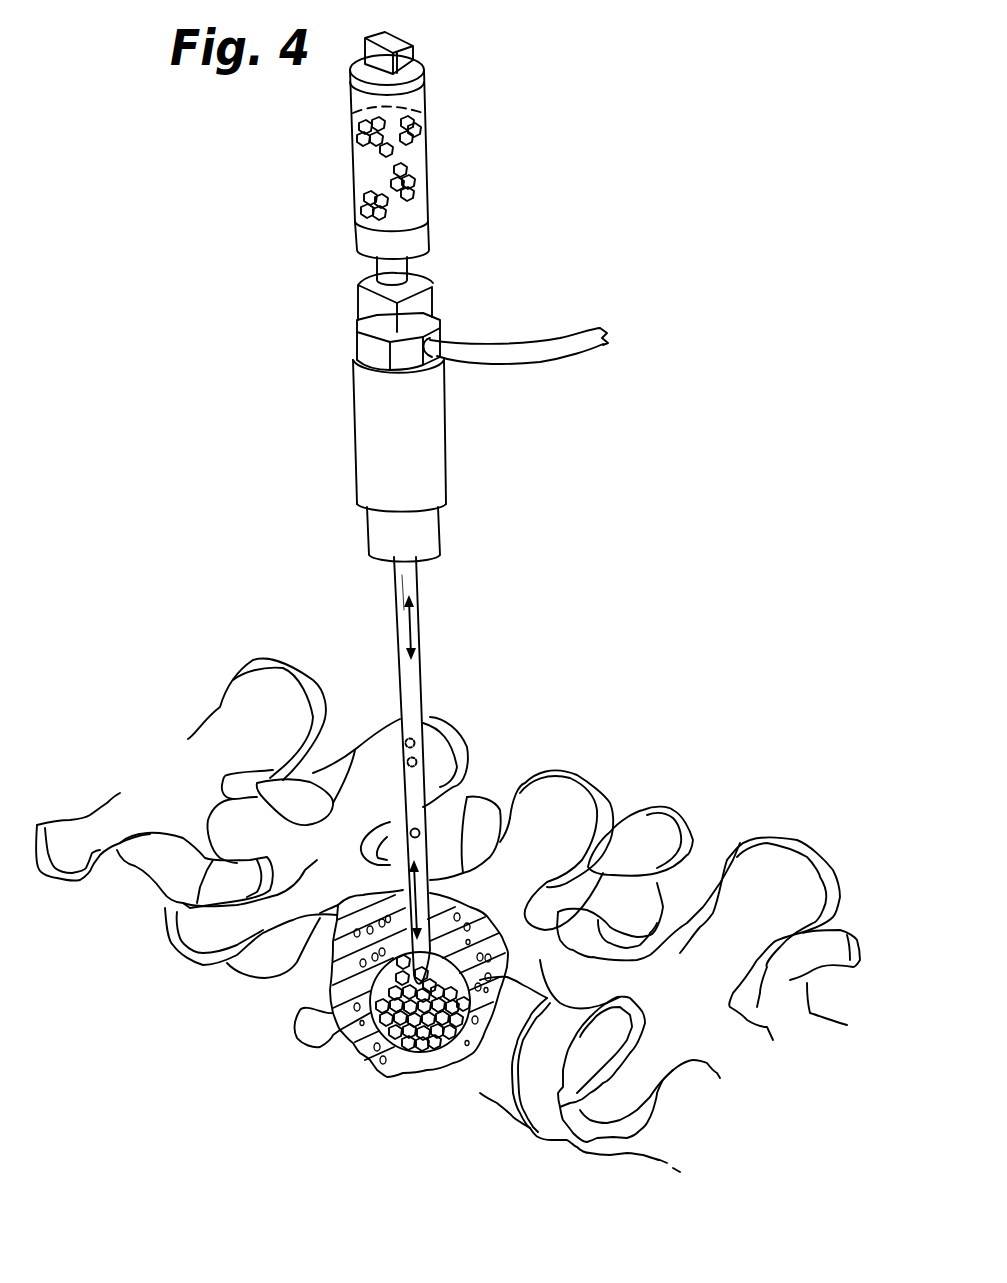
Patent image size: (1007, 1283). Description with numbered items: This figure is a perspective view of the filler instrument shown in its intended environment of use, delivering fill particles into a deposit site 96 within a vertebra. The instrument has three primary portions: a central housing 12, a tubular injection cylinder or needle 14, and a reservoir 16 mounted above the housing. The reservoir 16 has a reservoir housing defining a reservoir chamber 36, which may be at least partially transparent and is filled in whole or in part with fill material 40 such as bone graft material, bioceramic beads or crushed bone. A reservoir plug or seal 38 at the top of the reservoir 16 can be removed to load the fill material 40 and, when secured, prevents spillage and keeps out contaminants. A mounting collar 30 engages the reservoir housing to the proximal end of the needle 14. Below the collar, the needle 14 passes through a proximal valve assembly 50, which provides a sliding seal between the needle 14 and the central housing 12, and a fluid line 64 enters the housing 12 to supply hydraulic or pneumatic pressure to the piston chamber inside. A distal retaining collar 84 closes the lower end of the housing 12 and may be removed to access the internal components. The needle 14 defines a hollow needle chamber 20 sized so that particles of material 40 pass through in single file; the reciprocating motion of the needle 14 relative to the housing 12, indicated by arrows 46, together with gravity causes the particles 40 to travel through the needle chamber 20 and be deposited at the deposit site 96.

The central housing 12 is at (345, 424).
The tubular injection cylinder or needle 14 is at (428, 699).
The reservoir 16 is at (435, 157).
The needle chamber 20 is at (410, 668).
The mounting collar 30 is at (413, 245).
The reservoir chamber 36 is at (362, 163).
The reservoir plug or seal 38 is at (423, 74).
The fill material 40 is at (365, 190).
The arrows 46 is at (408, 627).
The proximal valve assembly 50 is at (427, 302).
The fluid line 64 is at (520, 368).
The distal retaining collar 84 is at (382, 527).
The deposit site 96 is at (350, 1047).